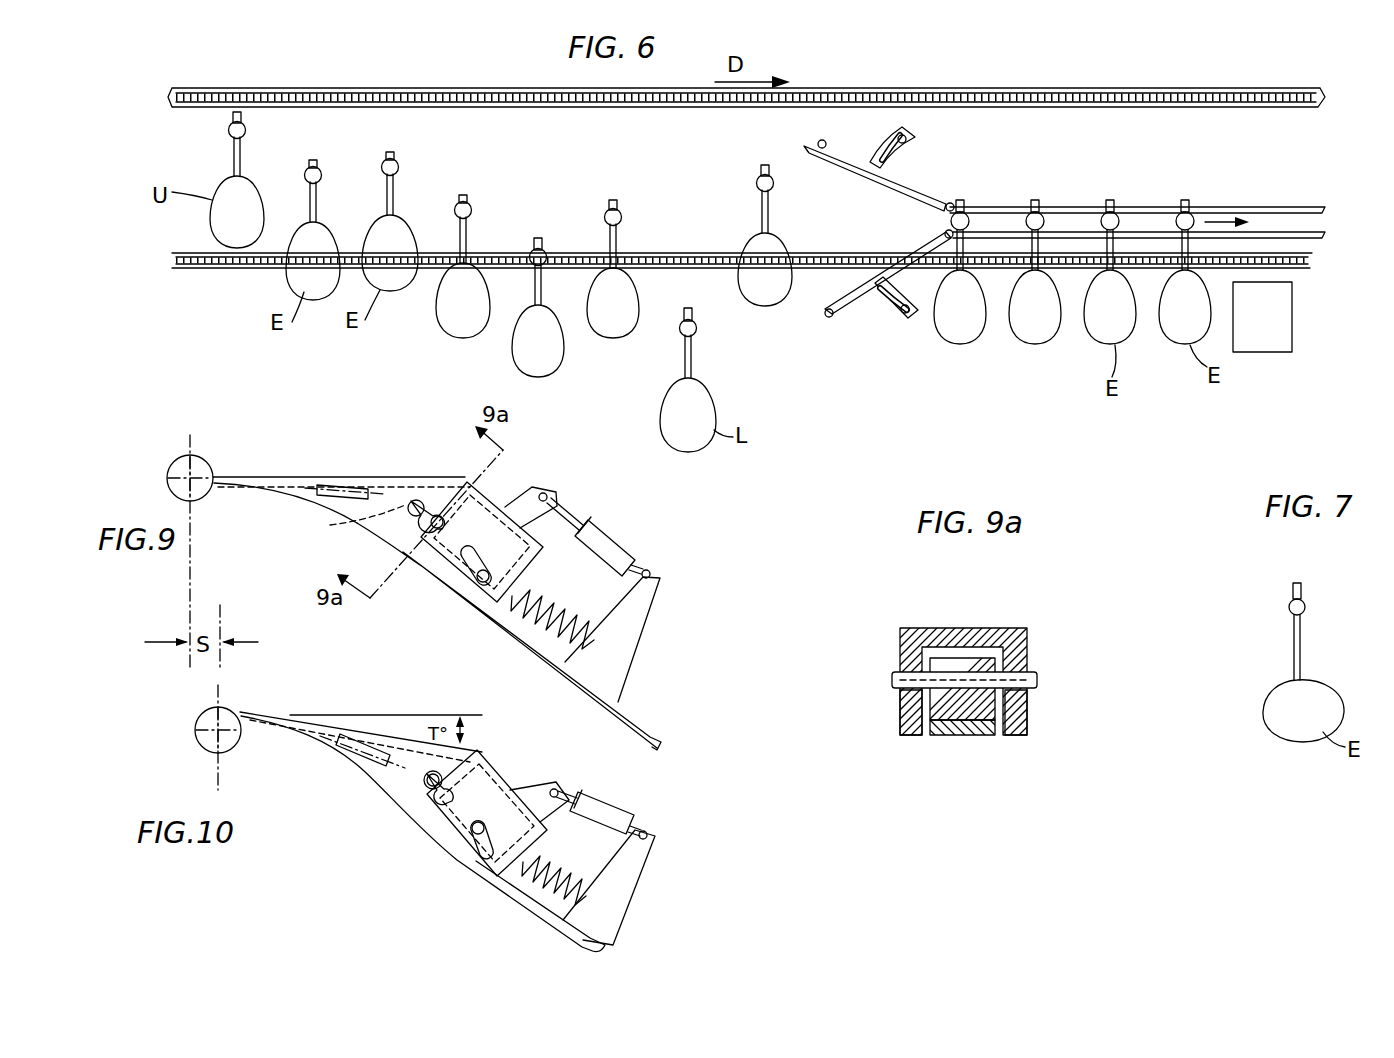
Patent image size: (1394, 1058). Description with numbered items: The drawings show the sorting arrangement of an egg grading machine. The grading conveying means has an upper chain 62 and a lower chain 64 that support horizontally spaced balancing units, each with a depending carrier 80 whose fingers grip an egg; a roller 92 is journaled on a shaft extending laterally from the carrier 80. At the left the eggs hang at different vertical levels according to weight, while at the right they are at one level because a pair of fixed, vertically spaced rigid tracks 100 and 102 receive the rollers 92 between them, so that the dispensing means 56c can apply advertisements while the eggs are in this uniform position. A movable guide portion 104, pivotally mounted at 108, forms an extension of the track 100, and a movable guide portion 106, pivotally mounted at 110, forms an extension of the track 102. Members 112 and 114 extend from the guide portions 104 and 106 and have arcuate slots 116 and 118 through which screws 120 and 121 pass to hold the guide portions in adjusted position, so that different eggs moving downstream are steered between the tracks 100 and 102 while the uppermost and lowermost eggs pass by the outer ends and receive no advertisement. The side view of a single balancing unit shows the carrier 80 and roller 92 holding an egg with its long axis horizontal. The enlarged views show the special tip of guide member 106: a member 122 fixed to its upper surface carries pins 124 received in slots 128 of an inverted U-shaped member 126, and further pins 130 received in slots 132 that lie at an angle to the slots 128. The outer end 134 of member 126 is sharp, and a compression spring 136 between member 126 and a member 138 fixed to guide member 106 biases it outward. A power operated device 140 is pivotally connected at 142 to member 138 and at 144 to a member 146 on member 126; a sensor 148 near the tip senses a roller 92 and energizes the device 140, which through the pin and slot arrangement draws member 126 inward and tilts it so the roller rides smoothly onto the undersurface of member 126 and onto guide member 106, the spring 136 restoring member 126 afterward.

In FIG. 6, the upper chain 62 is at (363, 88).
In FIG. 6, the lower chain 64 is at (218, 270).
In FIG. 6, the carrier 80 is at (245, 152).
In FIG. 7, the carrier 80 is at (1302, 657).
In FIG. 6, the roller 92 is at (229, 130).
In FIG. 9, the roller 92 is at (170, 468).
In FIG. 10, the roller 92 is at (203, 747).
In FIG. 7, the roller 92 is at (1306, 606).
In FIG. 6, the track 100 is at (1310, 238).
In FIG. 6, the track 102 is at (1251, 207).
In FIG. 6, the movable guide portion 104 is at (831, 322).
In FIG. 6, the movable guide portion 106 is at (818, 140).
In FIG. 9, the movable guide portion 106 is at (634, 722).
In FIG. 10, the movable guide portion 106 is at (582, 938).
In FIG. 9A, the movable guide portion 106 is at (962, 737).
In FIG. 6, the pivot 108 is at (943, 236).
In FIG. 6, the pivot 110 is at (952, 200).
In FIG. 6, the member 112 is at (893, 332).
In FIG. 6, the member 114 is at (915, 125).
In FIG. 6, the arcuate slot 116 is at (882, 296).
In FIG. 6, the arcuate slot 118 is at (888, 158).
In FIG. 6, the screw 120 is at (908, 320).
In FIG. 6, the screw 121 is at (895, 136).
In FIG. 9, the member 122 is at (405, 520).
In FIG. 10, the member 122 is at (428, 838).
In FIG. 9A, the member 122 is at (975, 663).
In FIG. 9, the pins 124 is at (427, 512).
In FIG. 10, the pins 124 is at (427, 778).
In FIG. 9A, the pins 124 is at (1038, 680).
In FIG. 9, the member 126 is at (449, 500).
In FIG. 10, the member 126 is at (482, 748).
In FIG. 9A, the member 126 is at (935, 628).
In FIG. 9, the slots 128 is at (414, 500).
In FIG. 10, the slots 128 is at (430, 793).
In FIG. 9A, the slots 128 is at (903, 707).
In FIG. 9, the pins 130 is at (480, 587).
In FIG. 10, the pins 130 is at (475, 842).
In FIG. 9, the slots 132 is at (468, 563).
In FIG. 10, the slots 132 is at (482, 858).
In FIG. 9, the outer end 134 is at (227, 475).
In FIG. 9, the compression spring 136 is at (548, 584).
In FIG. 10, the compression spring 136 is at (552, 849).
In FIG. 9, the member 138 is at (628, 623).
In FIG. 10, the member 138 is at (628, 881).
In FIG. 9, the power operated device 140 is at (604, 538).
In FIG. 10, the power operated device 140 is at (608, 813).
In FIG. 9, the pivot 142 is at (650, 570).
In FIG. 10, the pivot 142 is at (648, 832).
In FIG. 9, the pivot 144 is at (548, 493).
In FIG. 10, the pivot 144 is at (557, 789).
In FIG. 9, the member 146 is at (523, 500).
In FIG. 10, the member 146 is at (533, 793).
In FIG. 9, the sensor 148 is at (332, 486).
In FIG. 6, the dispensing means 56c is at (1285, 328).